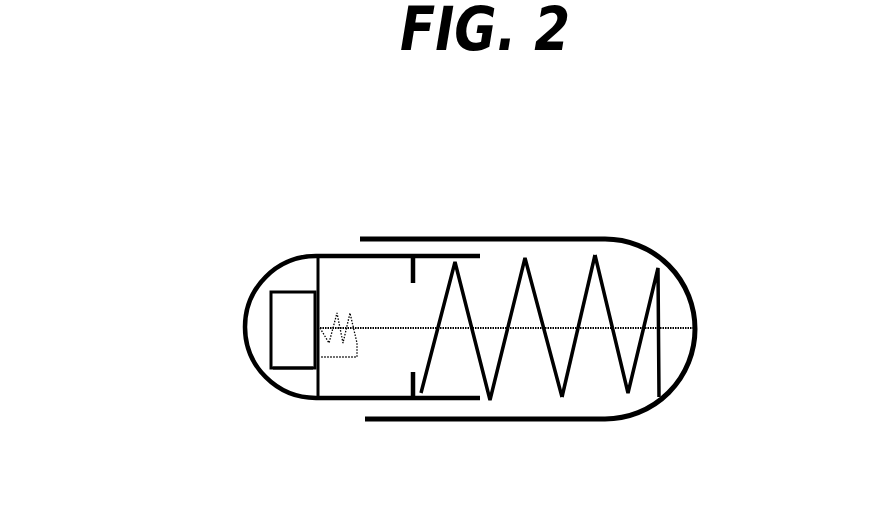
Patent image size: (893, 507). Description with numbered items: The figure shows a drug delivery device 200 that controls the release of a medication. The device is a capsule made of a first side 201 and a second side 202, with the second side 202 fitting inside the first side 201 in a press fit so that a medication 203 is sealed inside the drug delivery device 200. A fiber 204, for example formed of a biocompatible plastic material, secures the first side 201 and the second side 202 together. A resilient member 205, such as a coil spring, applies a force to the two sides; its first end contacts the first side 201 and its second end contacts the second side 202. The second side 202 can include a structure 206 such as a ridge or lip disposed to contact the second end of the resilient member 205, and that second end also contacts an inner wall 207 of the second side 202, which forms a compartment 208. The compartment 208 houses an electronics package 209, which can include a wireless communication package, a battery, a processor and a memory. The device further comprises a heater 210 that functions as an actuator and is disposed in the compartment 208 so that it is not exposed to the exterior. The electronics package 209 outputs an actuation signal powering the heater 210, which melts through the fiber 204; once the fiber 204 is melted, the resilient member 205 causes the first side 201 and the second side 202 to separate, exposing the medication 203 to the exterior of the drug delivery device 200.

The drug delivery device 200 is at (151, 156).
The first side 201 is at (686, 287).
The second side 202 is at (248, 305).
The medication 203 is at (564, 280).
The fiber 204 is at (388, 324).
The resilient member 205 is at (573, 358).
The structure 206 is at (409, 267).
The inner wall 207 is at (297, 258).
The compartment 208 is at (262, 331).
The electronics package 209 is at (283, 369).
The heater 210 is at (338, 367).